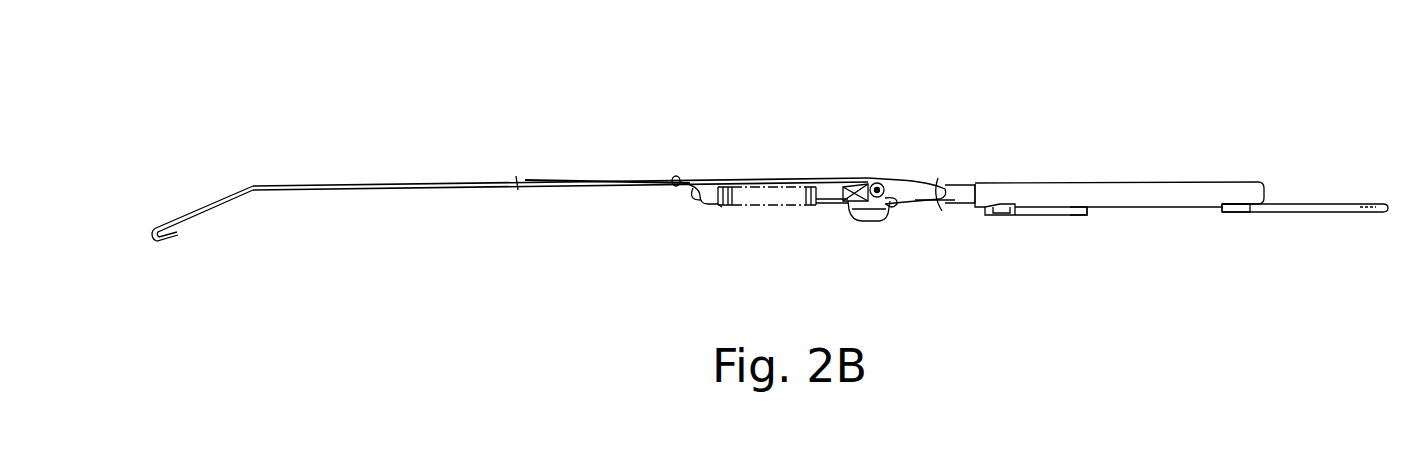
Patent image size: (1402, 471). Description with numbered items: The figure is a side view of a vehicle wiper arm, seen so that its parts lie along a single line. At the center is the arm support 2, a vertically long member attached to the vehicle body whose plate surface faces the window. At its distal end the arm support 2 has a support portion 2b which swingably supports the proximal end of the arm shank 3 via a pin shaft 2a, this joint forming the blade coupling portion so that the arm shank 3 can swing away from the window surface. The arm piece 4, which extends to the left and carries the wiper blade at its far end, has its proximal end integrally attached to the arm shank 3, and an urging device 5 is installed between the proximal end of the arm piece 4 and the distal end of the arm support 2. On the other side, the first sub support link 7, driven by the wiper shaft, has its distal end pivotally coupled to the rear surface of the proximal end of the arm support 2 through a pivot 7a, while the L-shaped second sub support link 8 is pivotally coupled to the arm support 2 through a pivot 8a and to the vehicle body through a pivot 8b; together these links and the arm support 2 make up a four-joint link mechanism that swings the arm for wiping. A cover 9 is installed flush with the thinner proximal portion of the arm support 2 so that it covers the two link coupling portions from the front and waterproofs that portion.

The arm support 2 is at (962, 183).
The pin shaft 2a is at (884, 206).
The support portion 2b is at (858, 207).
The arm shank 3 is at (785, 178).
The arm piece 4 is at (372, 189).
The urging device 5 is at (721, 211).
The first sub support link 7 is at (1331, 213).
The pivot 7a is at (1240, 213).
The second sub support link 8 is at (1038, 214).
The pivot 8a is at (1072, 217).
The pivot 8b is at (1000, 219).
The cover 9 is at (1226, 180).